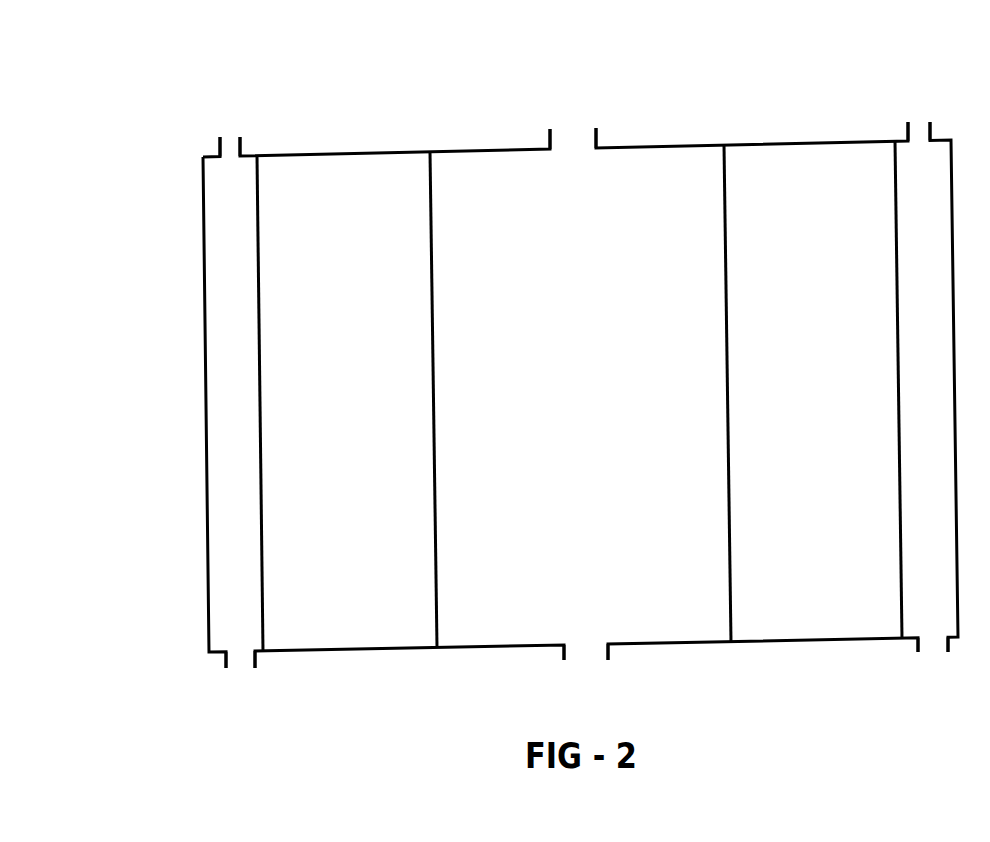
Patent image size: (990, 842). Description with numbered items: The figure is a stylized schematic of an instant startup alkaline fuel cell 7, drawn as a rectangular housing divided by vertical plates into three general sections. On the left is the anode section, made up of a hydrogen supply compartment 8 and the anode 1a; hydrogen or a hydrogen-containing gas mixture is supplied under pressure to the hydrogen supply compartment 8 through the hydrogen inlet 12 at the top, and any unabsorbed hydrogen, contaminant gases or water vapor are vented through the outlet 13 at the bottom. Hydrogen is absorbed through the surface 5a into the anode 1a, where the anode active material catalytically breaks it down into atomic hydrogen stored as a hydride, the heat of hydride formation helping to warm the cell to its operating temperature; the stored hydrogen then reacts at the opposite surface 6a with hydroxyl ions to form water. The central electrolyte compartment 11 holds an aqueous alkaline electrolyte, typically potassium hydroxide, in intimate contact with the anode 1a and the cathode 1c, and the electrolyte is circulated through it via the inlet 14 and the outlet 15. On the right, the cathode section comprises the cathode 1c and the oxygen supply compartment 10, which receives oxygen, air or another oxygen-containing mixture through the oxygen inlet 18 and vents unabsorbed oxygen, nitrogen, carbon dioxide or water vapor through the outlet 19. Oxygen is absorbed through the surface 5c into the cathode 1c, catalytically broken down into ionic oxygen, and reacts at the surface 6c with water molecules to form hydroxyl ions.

The alkaline fuel cell 7 is at (200, 283).
The hydrogen supply compartment 8 is at (226, 390).
The anode 1a is at (335, 390).
The surface of anode 5a is at (262, 209).
The surface of anode 6a is at (440, 204).
The electrolyte compartment 11 is at (580, 380).
The surface of cathode 6c is at (716, 168).
The surface of cathode 5c is at (887, 165).
The cathode 1c is at (800, 380).
The oxygen supply compartment 10 is at (928, 388).
The hydrogen inlet 12 is at (230, 128).
The outlet 13 is at (240, 671).
The inlet 14 is at (572, 120).
The outlet 15 is at (588, 662).
The oxygen inlet 18 is at (918, 112).
The outlet 19 is at (933, 653).